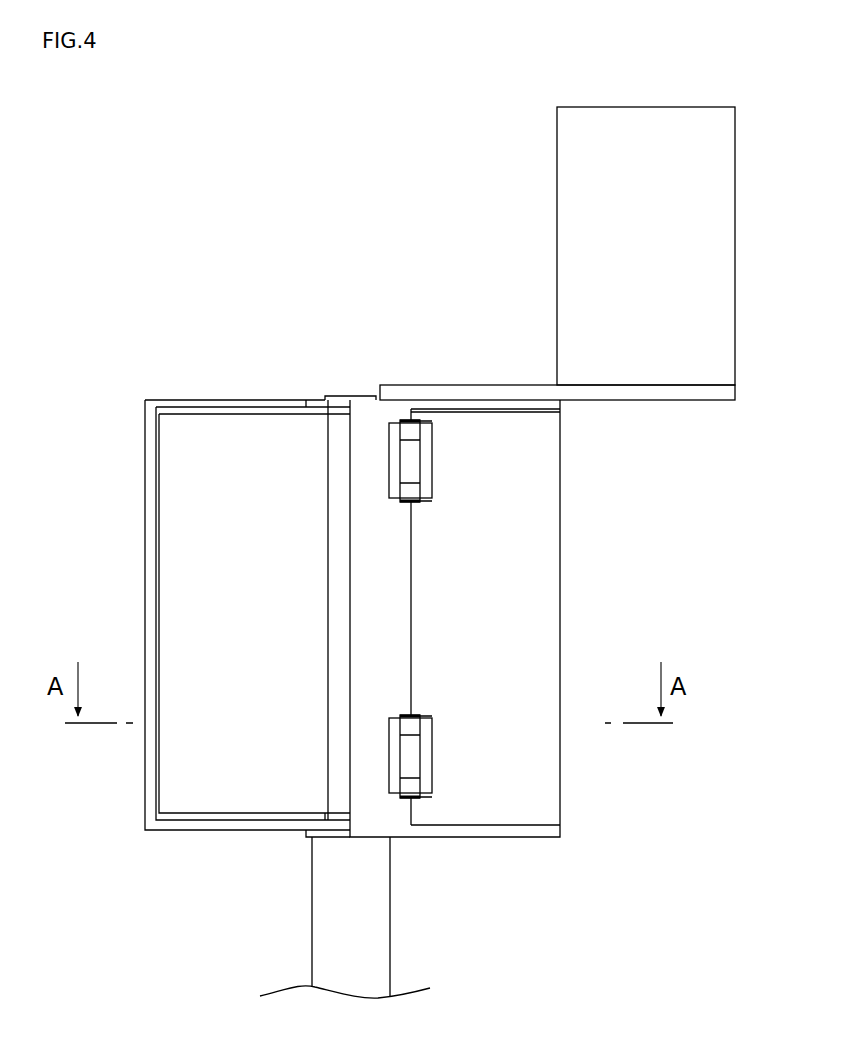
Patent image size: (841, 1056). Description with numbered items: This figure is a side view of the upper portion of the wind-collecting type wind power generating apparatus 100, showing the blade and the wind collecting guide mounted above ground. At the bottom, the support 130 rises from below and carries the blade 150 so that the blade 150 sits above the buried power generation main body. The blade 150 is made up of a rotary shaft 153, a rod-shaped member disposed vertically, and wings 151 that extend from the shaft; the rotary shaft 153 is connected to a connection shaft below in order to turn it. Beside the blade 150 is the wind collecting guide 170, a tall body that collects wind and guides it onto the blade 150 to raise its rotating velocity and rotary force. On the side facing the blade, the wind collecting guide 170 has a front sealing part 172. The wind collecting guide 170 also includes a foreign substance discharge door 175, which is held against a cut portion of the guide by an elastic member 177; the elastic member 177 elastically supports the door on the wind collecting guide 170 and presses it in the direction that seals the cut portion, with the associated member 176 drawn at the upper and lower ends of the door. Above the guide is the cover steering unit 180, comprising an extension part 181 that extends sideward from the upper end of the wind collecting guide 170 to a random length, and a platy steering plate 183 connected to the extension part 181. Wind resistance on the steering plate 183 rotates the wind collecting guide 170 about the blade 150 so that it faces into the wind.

The wind-collecting type wind power generating apparatus 100 is at (194, 140).
The support 130 is at (327, 908).
The blade 150 is at (221, 615).
The wings 151 is at (156, 553).
The rotary shaft 153 is at (330, 581).
The wind collecting guide 170 is at (467, 597).
The front sealing part 172 is at (145, 451).
The foreign substance discharge door 175 is at (522, 578).
The roller 176 is at (408, 450).
The elastic member 177 is at (400, 422).
The cover steering unit 180 is at (557, 253).
The extension part 181 is at (527, 391).
The steering plate 183 is at (573, 171).